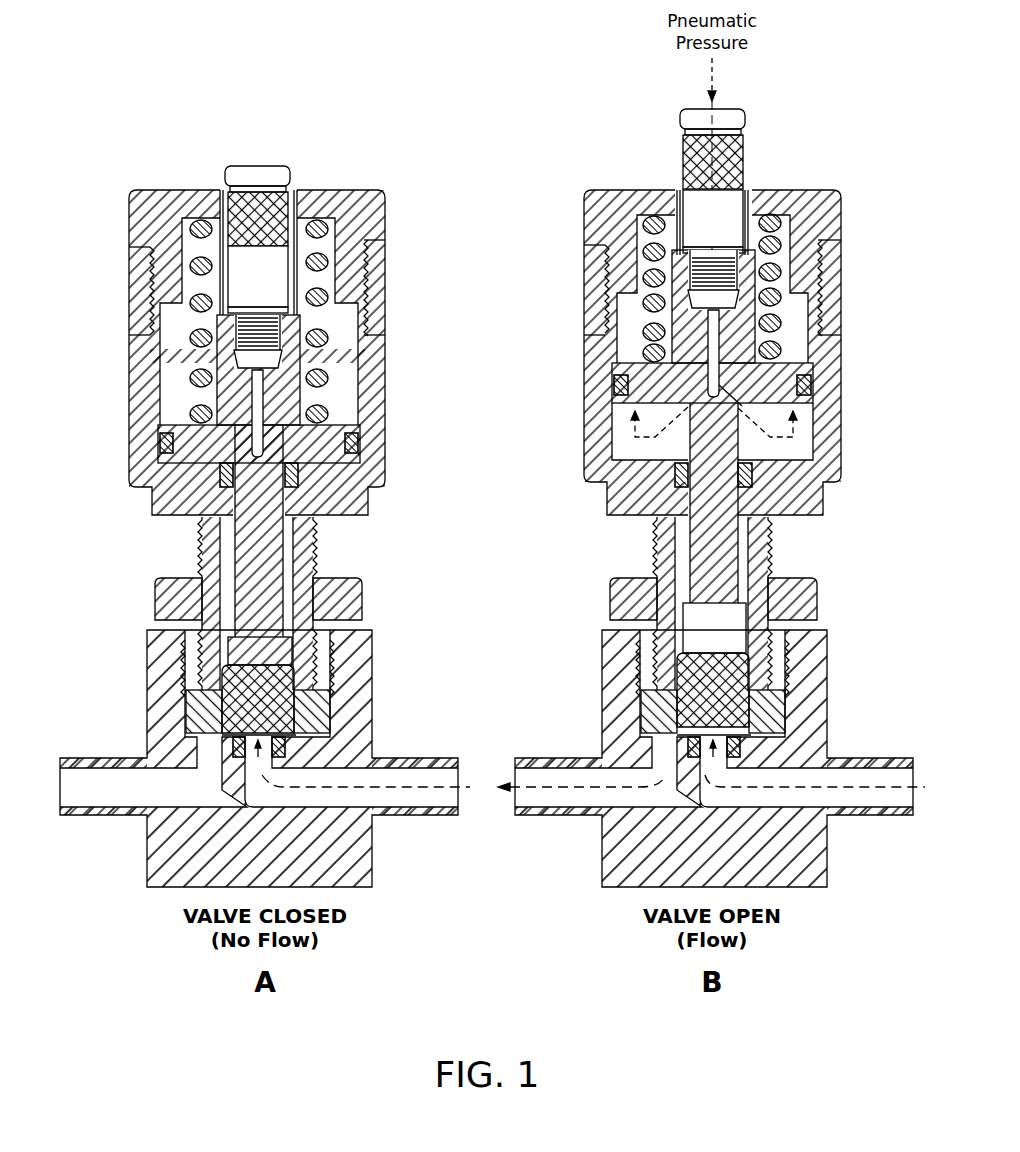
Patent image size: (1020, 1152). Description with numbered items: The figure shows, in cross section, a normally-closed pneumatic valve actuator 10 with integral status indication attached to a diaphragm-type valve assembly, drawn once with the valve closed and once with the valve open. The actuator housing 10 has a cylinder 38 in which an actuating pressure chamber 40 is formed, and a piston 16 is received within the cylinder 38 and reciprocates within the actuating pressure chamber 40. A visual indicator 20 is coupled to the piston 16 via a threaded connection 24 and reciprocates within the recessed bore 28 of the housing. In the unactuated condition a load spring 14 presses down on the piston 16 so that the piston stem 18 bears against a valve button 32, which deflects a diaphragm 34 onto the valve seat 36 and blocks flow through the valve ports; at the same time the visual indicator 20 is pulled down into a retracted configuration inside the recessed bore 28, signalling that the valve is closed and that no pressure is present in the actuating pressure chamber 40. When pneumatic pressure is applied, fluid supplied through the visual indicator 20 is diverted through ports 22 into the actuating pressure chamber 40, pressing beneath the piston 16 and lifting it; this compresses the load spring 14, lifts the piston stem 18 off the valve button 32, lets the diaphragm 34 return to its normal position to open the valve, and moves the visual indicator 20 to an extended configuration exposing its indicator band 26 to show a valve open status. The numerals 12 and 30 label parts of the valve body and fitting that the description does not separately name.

In FIG. 1A, the pneumatic valve actuator 10 is at (399, 304).
In FIG. 1A, the valve stem tube 12 is at (316, 562).
In FIG. 1A, the load spring 14 is at (312, 292).
In FIG. 1B, the load spring 14 is at (753, 292).
In FIG. 1A, the piston 16 is at (260, 428).
In FIG. 1B, the piston 16 is at (742, 393).
In FIG. 1A, the piston stem 18 is at (263, 637).
In FIG. 1A, the visual indicator 20 is at (270, 273).
In FIG. 1B, the visual indicator 20 is at (724, 210).
In FIG. 1A, the ports 22 is at (290, 477).
In FIG. 1B, the ports 22 is at (838, 345).
In FIG. 1B, the threaded connection 24 is at (823, 283).
In FIG. 1B, the indicator band 26 is at (745, 158).
In FIG. 1A, the recessed bore 28 is at (212, 211).
In FIG. 1B, the recessed bore 28 is at (666, 200).
In FIG. 1A, the fitting body 30 is at (387, 660).
In FIG. 1A, the valve button 32 is at (262, 693).
In FIG. 1B, the valve button 32 is at (742, 695).
In FIG. 1A, the diaphragm 34 is at (304, 718).
In FIG. 1B, the diaphragm 34 is at (788, 720).
In FIG. 1A, the valve seat 36 is at (278, 748).
In FIG. 1B, the valve seat 36 is at (760, 750).
In FIG. 1A, the cylinder 38 is at (132, 409).
In FIG. 1B, the cylinder 38 is at (592, 425).
In FIG. 1B, the actuating pressure chamber 40 is at (752, 445).